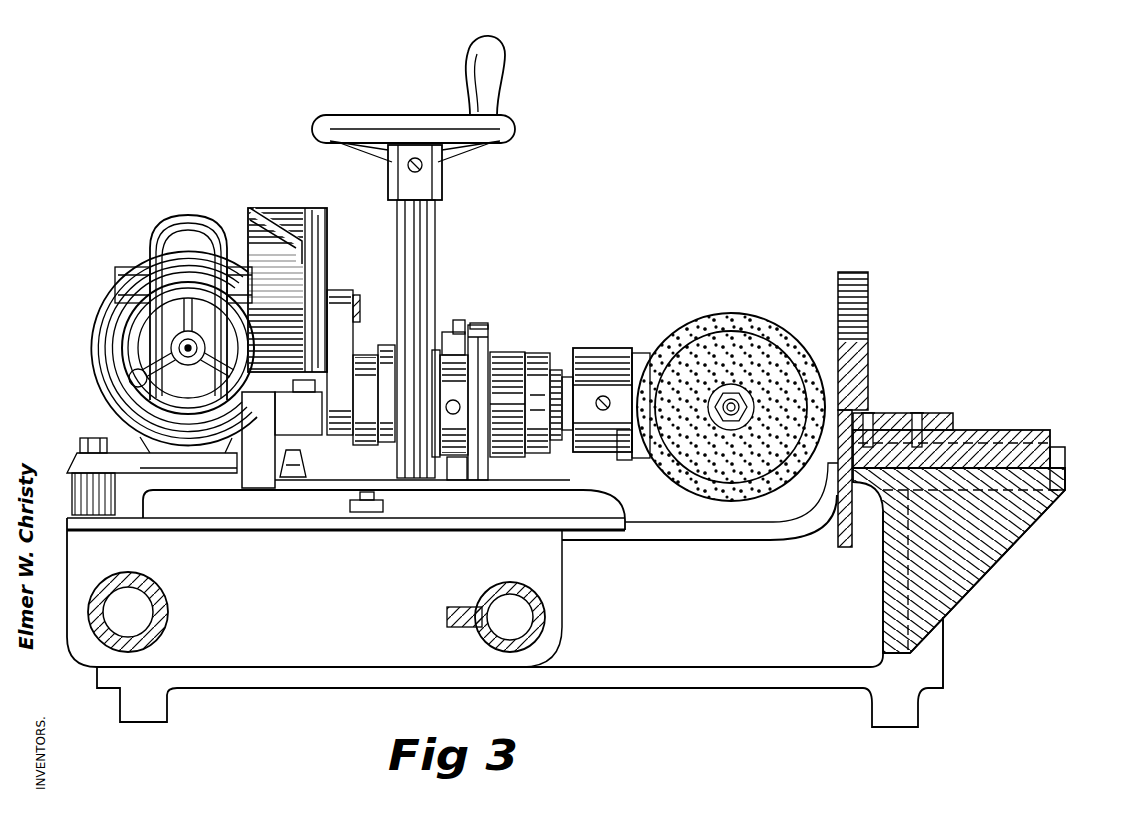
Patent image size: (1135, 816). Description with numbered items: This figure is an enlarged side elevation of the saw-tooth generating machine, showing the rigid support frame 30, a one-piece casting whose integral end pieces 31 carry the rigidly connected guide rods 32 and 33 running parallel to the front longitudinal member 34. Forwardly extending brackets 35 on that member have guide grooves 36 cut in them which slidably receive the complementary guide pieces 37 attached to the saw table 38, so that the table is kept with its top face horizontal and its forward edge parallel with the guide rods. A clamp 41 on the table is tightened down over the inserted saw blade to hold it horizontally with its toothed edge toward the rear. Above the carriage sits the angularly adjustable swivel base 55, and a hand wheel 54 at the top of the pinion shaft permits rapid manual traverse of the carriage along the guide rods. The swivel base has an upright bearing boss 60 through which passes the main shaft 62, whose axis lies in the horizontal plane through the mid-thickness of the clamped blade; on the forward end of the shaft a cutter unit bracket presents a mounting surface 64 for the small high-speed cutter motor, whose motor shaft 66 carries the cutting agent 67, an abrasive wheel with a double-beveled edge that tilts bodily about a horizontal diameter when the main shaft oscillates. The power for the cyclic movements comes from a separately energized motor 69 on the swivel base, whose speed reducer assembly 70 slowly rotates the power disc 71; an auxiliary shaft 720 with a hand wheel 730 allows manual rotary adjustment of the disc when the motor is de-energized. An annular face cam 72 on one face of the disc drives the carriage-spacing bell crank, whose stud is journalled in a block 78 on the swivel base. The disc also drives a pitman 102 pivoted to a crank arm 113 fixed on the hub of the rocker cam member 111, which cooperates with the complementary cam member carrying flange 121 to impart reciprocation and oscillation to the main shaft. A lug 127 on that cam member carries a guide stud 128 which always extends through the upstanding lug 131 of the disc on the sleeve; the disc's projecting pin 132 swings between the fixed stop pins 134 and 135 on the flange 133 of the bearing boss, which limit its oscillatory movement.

The support frame 30 is at (955, 669).
The end pieces 31 is at (740, 655).
The guide rod 32 is at (540, 617).
The guide rod 33 is at (168, 610).
The front longitudinal member 34 is at (930, 643).
The brackets 35 is at (990, 540).
The guide grooves 36 is at (1055, 458).
The guide pieces 37 is at (975, 445).
The saw table 38 is at (880, 414).
The clamp 41 is at (860, 342).
The hand wheel 54 is at (415, 115).
The swivel base 55 is at (585, 500).
The bearing boss 60 is at (526, 355).
The main shaft 62 is at (567, 378).
The mounting surface 64 is at (613, 380).
The motor shaft 66 is at (737, 395).
The cutting agent 67 is at (742, 325).
The motor 69 is at (92, 378).
The speed reducer assembly 70 is at (152, 228).
The power disc 71 is at (328, 212).
The annular face cam 72 is at (286, 208).
The block 78 is at (258, 470).
The pitman 102 is at (357, 342).
The rocker cam member 111 is at (382, 458).
The crank arm 113 is at (363, 448).
The flange 121 is at (390, 326).
The lug 127 is at (442, 325).
The guide stud 128 is at (444, 330).
The upstanding lug 131 is at (460, 347).
The projecting pin 132 is at (468, 387).
The flange 133 is at (481, 322).
The stop pin 134 is at (476, 325).
The stop pin 135 is at (447, 470).
The auxiliary shaft 720 is at (180, 343).
The hand wheel 730 is at (132, 350).